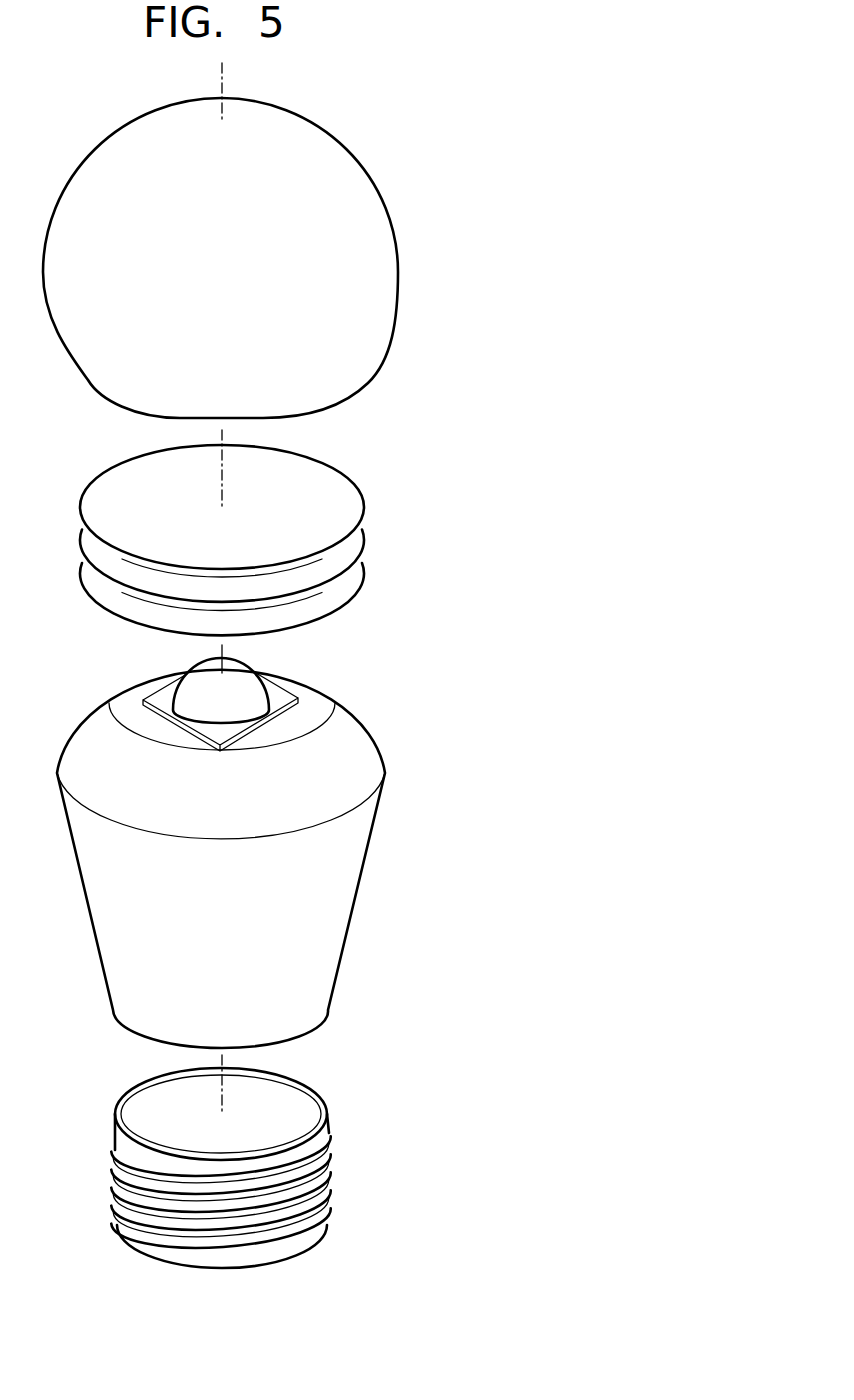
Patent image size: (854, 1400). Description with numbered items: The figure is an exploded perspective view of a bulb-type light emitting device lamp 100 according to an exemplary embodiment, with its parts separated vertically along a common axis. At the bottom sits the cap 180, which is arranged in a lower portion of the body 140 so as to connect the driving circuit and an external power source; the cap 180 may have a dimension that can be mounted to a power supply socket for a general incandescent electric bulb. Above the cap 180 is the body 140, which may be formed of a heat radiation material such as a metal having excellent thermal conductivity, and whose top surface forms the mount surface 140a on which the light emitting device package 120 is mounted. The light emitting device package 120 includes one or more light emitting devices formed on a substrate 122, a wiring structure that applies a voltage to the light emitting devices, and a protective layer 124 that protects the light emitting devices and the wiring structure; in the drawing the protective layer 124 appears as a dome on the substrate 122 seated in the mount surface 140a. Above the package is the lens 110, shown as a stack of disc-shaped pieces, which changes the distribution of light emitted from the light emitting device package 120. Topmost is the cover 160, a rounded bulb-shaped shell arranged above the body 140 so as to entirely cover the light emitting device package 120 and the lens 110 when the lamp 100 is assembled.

The bulb-type light emitting device lamp 100 is at (408, 115).
The lens 110 is at (344, 500).
The light emitting device package 120 is at (158, 673).
The substrate 122 is at (283, 698).
The protective layer 124 is at (249, 679).
The body 140 is at (243, 859).
The mount surface 140a is at (318, 705).
The cover 160 is at (390, 278).
The cap 180 is at (330, 1158).